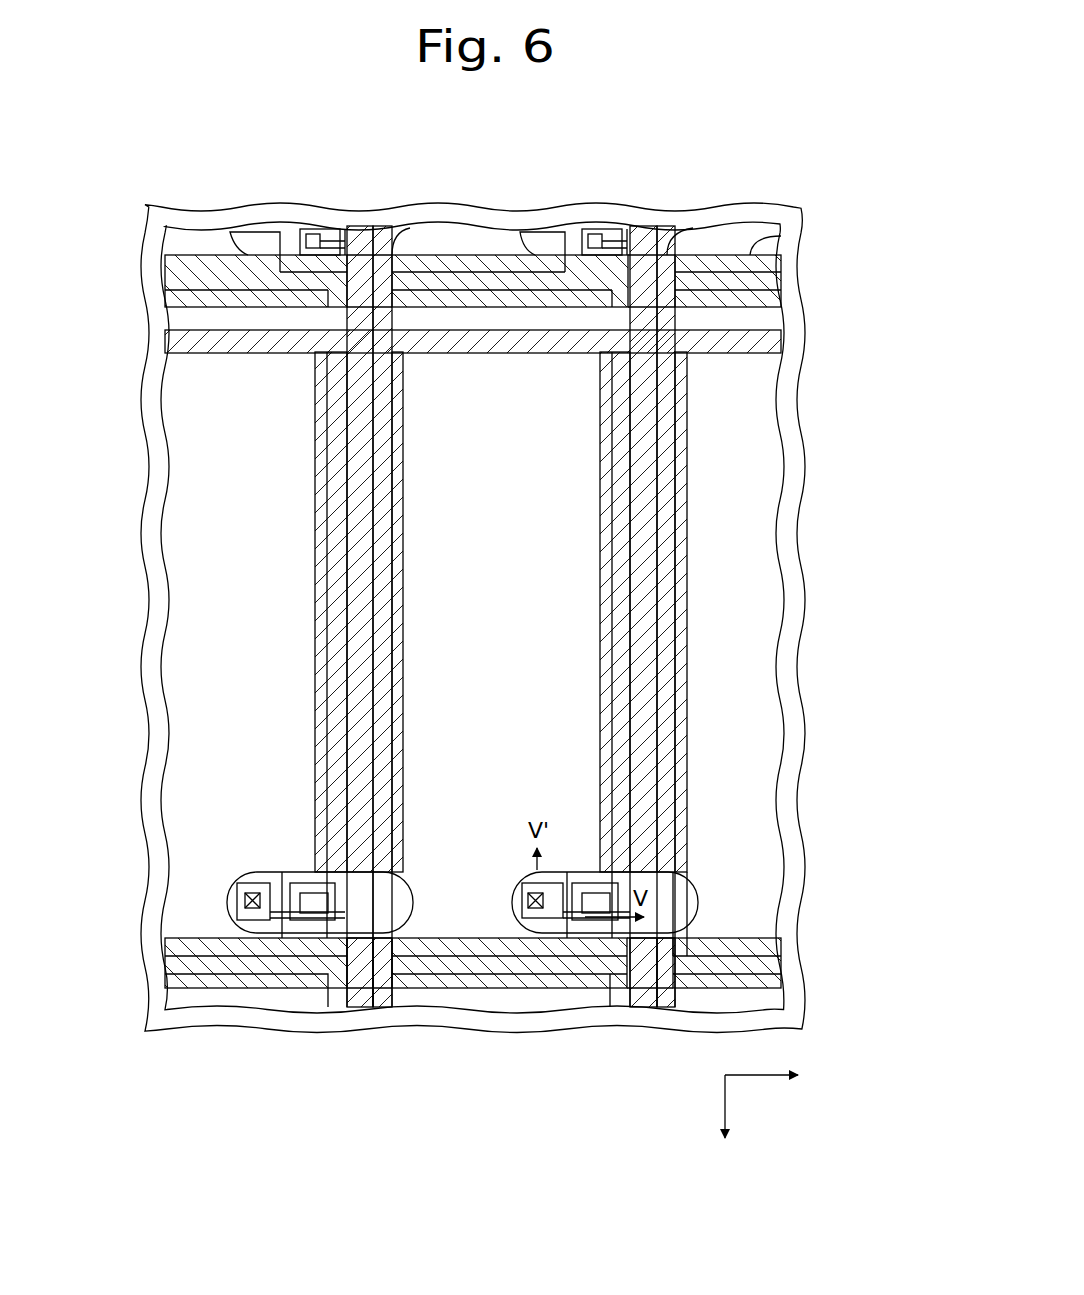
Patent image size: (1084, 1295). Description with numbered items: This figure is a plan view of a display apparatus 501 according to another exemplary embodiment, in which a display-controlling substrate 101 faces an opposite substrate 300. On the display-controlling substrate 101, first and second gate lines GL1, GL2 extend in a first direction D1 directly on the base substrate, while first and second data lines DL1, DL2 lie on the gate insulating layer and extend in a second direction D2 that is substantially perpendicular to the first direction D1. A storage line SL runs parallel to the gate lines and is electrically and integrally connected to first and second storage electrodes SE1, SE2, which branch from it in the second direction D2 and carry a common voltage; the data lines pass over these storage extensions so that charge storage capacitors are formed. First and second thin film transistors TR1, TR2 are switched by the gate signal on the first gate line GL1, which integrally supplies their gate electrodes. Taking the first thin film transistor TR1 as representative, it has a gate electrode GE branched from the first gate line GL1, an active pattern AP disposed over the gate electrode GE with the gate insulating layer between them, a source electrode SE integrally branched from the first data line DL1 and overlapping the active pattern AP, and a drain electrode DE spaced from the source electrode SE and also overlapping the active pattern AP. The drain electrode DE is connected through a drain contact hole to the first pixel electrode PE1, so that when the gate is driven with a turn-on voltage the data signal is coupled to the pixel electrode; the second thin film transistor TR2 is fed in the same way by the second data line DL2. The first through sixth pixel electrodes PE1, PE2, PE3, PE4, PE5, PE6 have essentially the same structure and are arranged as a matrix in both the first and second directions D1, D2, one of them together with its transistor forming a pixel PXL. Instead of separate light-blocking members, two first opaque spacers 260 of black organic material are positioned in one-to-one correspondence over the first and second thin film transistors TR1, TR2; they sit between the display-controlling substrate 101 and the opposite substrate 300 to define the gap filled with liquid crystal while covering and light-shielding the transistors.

The display-controlling substrate 101 is at (770, 650).
The opposite substrate 300 is at (795, 560).
The display apparatus 501 is at (883, 553).
The first opaque spacer 260 is at (275, 873).
The first gate line GL1 is at (780, 945).
The second gate line GL2 is at (780, 262).
The storage line SL is at (775, 340).
The first data line DL1 is at (645, 1008).
The second data line DL2 is at (357, 1008).
The first storage electrode SE1 is at (600, 565).
The second storage electrode SE2 is at (315, 565).
The first pixel electrode PE1 is at (487, 290).
The second pixel electrode PE2 is at (250, 292).
The third pixel electrode PE3 is at (715, 258).
The fourth pixel electrode PE4 is at (383, 1008).
The fifth pixel electrode PE5 is at (165, 960).
The sixth pixel electrode PE6 is at (775, 963).
The first thin film transistor TR1 is at (608, 1095).
The second thin film transistor TR2 is at (310, 942).
The drain electrode DE is at (565, 925).
The gate electrode GE is at (595, 935).
The active pattern AP is at (615, 940).
The source electrode SE is at (622, 922).
The pixel PXL is at (552, 1133).
The first direction D1 is at (776, 1077).
The second direction D2 is at (725, 1123).